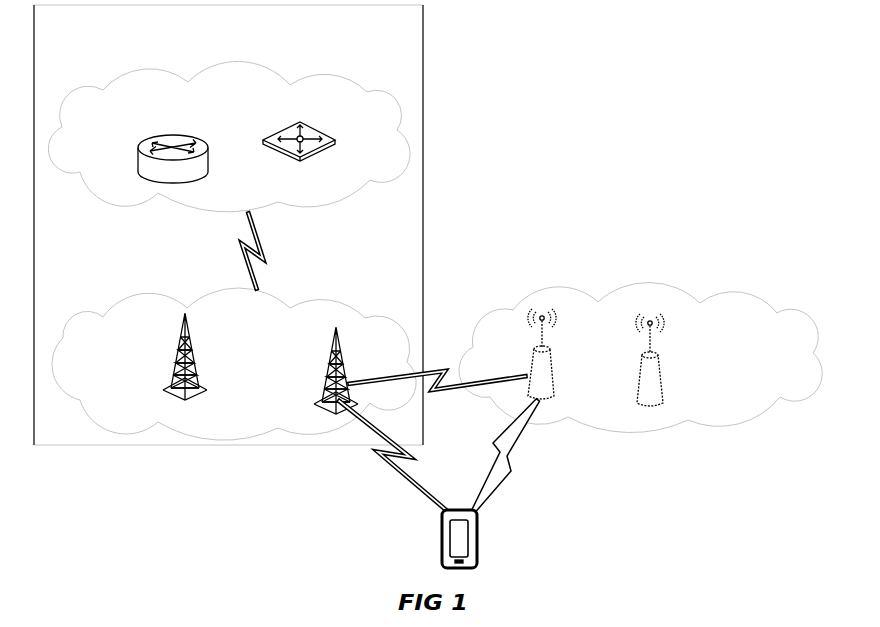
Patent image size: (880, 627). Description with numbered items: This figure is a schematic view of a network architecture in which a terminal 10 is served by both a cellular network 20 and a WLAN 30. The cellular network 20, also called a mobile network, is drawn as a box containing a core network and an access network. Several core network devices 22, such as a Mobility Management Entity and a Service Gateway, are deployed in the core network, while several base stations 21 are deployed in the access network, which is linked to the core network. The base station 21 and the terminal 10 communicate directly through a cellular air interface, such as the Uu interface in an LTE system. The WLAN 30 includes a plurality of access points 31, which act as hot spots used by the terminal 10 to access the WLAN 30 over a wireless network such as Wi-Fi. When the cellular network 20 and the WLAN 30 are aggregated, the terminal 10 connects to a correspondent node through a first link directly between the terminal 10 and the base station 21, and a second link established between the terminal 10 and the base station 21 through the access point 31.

The terminal 10 is at (479, 524).
The cellular network 20 is at (228, 225).
The base station 21 is at (193, 346).
The core network device 22 is at (197, 137).
The WLAN 30 is at (640, 357).
The access point 31 is at (551, 351).